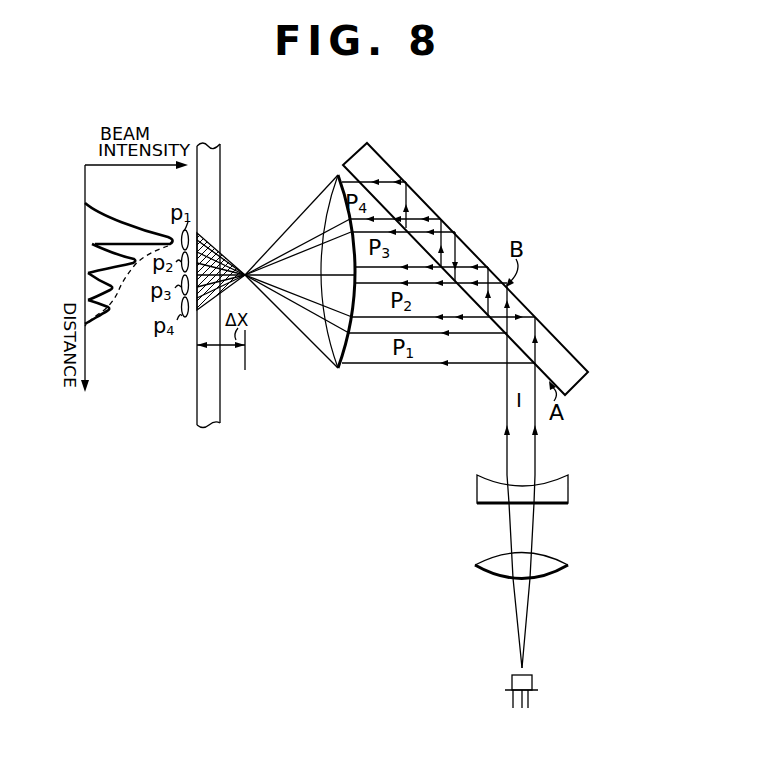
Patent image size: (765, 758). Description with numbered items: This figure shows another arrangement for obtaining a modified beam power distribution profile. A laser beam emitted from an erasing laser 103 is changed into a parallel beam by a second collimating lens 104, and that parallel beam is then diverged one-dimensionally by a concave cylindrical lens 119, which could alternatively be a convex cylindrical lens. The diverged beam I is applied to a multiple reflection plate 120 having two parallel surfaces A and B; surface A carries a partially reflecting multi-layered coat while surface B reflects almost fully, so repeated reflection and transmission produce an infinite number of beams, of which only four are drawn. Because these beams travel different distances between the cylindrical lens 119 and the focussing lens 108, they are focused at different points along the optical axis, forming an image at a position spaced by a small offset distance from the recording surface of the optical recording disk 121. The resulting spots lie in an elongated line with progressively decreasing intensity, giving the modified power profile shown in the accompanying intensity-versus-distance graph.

The erasing laser 103 is at (532, 682).
The second collimating lens 104 is at (576, 553).
The focussing lens 108 is at (338, 369).
The concave cylindrical lens 119 is at (568, 490).
The multiple reflection plate 120 is at (572, 360).
The optical recording disk 121 is at (221, 416).